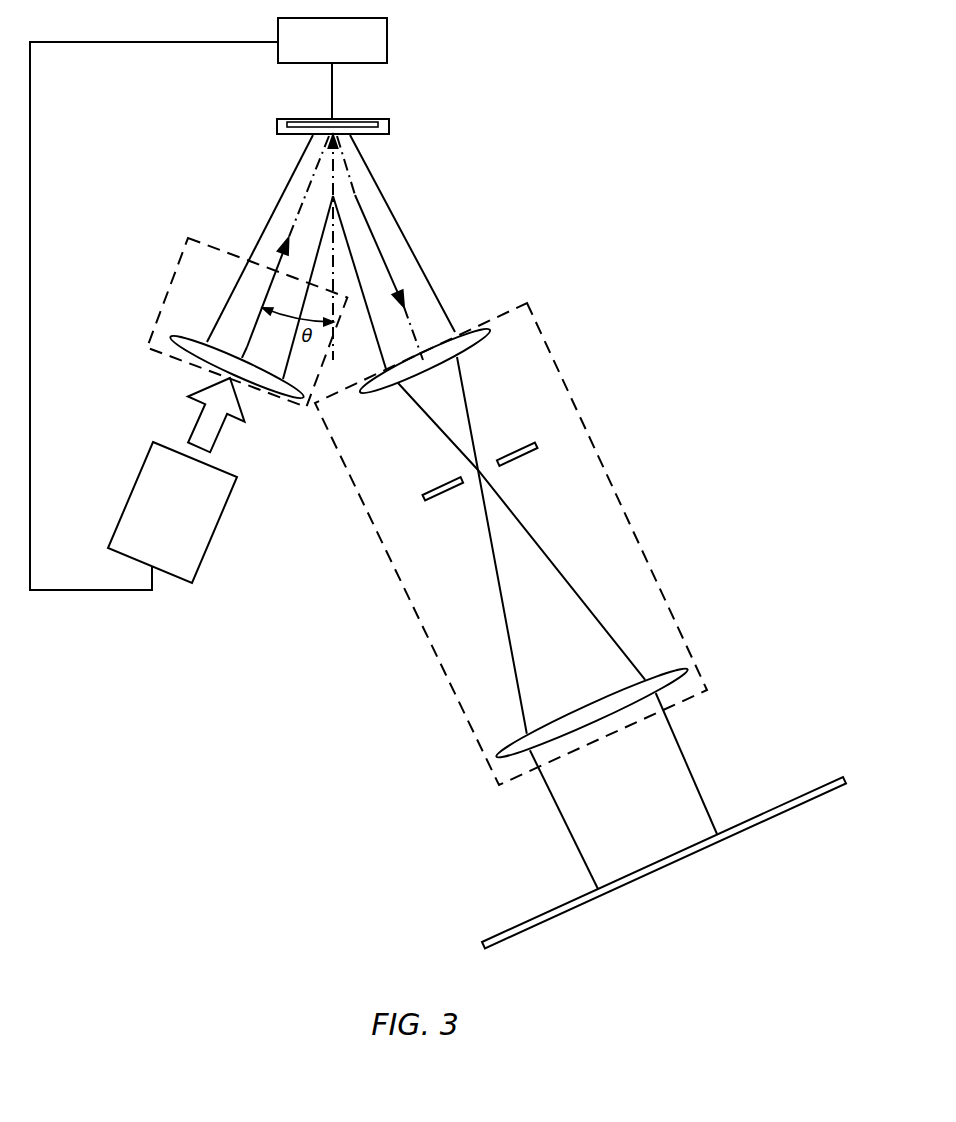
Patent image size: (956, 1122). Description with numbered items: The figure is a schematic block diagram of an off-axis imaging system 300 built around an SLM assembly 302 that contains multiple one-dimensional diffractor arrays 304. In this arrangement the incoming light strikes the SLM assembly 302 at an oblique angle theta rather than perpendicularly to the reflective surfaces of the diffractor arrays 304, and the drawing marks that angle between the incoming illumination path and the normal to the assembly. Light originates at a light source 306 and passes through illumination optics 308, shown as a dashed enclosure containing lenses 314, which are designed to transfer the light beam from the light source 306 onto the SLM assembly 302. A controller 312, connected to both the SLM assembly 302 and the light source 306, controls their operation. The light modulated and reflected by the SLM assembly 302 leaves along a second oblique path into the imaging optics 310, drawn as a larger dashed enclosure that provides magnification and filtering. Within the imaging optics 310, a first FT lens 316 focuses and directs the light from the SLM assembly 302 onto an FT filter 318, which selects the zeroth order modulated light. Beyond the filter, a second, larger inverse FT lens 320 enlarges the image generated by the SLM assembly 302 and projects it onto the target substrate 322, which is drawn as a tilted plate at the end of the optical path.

The imaging system 300 is at (692, 92).
The SLM assembly 302 is at (270, 108).
The 1D diffractor arrays 304 is at (360, 118).
The light source 306 is at (176, 480).
The illumination optics 308 is at (188, 237).
The imaging optics 310 is at (526, 302).
The controller 312 is at (349, 54).
The lenses 314 is at (184, 335).
The first FT lens 316 is at (492, 322).
The FT filter 318 is at (533, 444).
The second Inverse FT lens 320 is at (494, 755).
The target substrate 322 is at (812, 790).